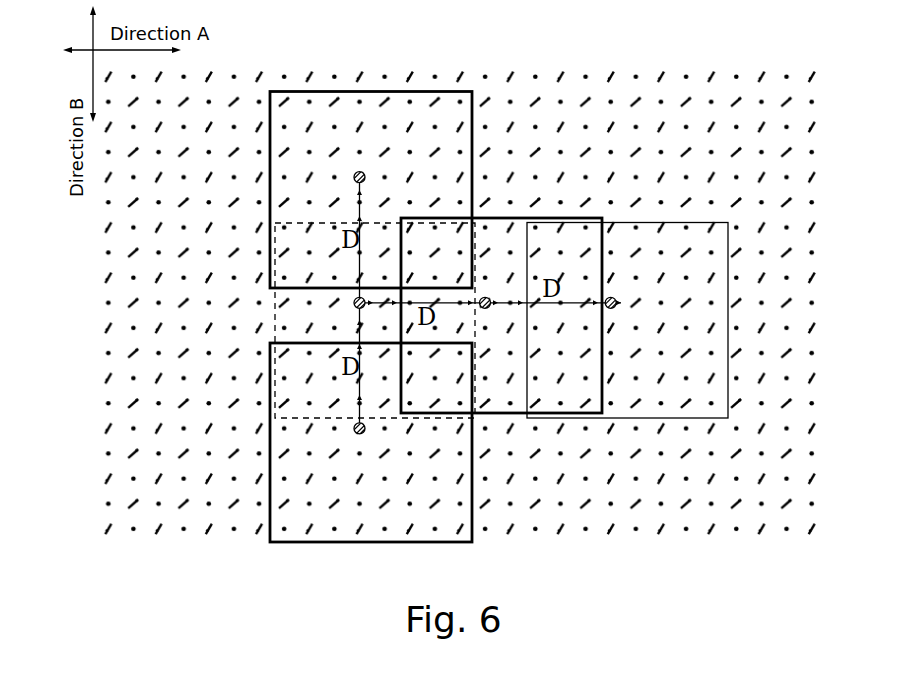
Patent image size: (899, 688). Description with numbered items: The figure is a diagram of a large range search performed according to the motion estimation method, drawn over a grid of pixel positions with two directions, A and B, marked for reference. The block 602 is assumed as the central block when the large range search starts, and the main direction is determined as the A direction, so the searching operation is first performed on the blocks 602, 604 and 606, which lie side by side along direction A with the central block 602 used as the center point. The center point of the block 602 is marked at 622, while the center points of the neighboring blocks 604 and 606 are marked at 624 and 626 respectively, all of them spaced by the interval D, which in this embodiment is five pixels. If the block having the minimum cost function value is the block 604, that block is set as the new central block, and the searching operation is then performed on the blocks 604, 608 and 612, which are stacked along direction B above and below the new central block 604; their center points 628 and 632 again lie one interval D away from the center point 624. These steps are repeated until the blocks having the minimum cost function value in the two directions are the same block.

The block 602 is at (547, 217).
The block 604 is at (275, 313).
The block 606 is at (672, 222).
The block 608 is at (368, 91).
The block 612 is at (270, 462).
The center point 622 is at (486, 297).
The center point 624 is at (355, 307).
The center point 626 is at (616, 302).
The center point 628 is at (360, 171).
The center point 632 is at (359, 434).